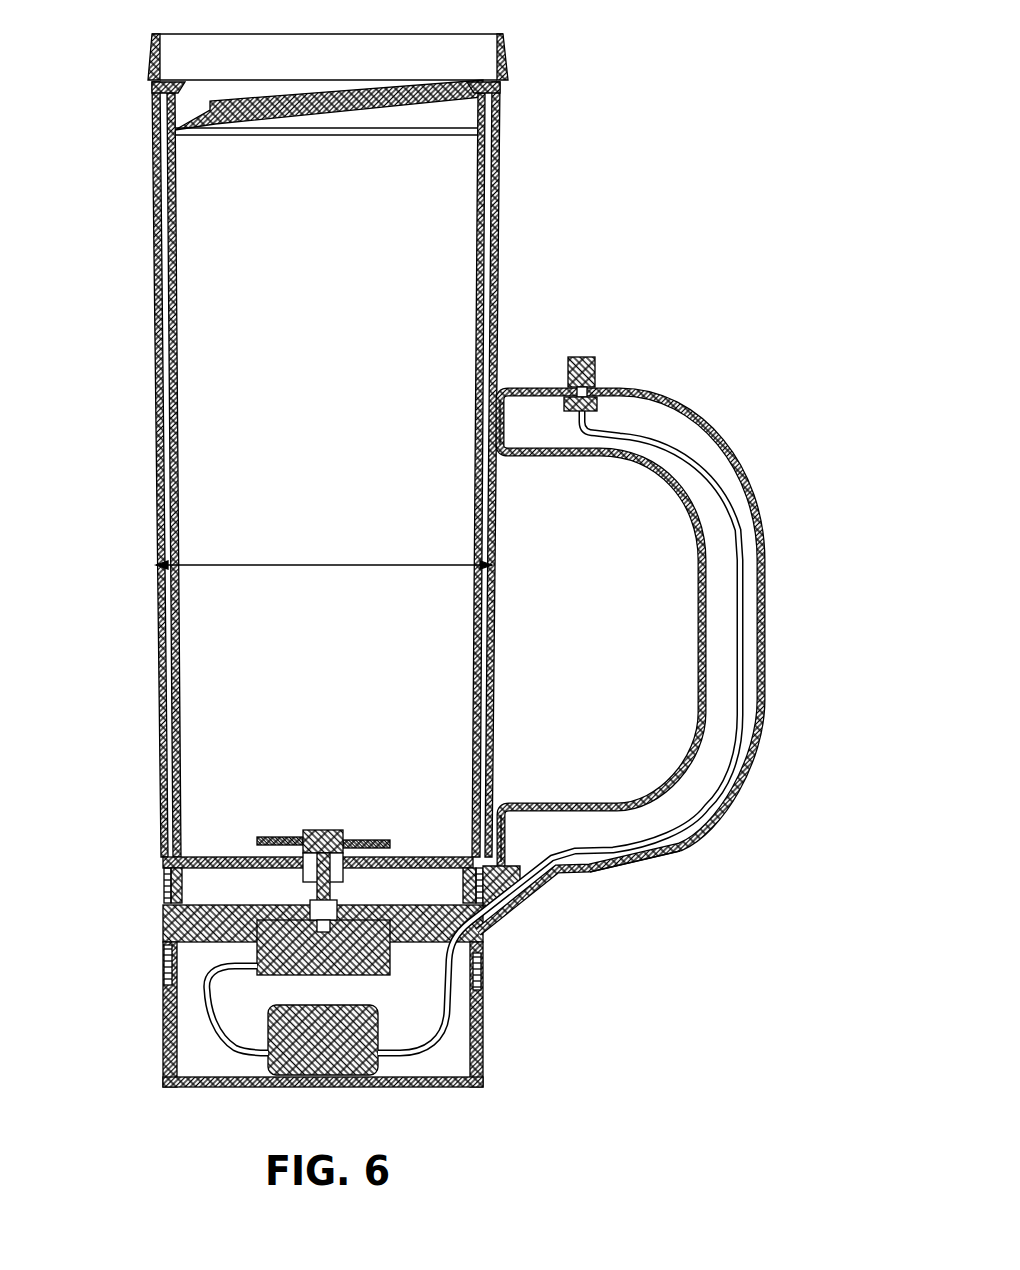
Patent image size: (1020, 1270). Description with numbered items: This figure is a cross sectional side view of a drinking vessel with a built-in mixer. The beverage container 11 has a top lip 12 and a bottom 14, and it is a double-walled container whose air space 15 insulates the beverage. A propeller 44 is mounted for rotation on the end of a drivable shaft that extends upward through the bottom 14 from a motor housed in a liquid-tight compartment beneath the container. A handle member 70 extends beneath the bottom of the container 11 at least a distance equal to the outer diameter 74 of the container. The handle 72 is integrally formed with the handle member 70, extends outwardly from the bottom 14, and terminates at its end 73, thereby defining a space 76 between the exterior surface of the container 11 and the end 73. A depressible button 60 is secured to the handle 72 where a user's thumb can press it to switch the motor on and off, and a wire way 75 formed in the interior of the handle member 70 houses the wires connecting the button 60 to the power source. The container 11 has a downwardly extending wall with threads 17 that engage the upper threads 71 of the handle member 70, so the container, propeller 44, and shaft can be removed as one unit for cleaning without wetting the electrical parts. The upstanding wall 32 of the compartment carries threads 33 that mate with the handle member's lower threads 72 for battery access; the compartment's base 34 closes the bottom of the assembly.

The beverage container 11 is at (500, 192).
The top lip 12 is at (500, 92).
The bottom 14 is at (420, 855).
The air space 15 is at (152, 393).
The threads 17 is at (163, 882).
The upstanding wall 32 is at (163, 1033).
The threads 33 is at (163, 972).
The base bottom plate 34 is at (447, 1075).
The propeller 44 is at (277, 836).
The depressible button 60 is at (600, 362).
The handle member 70 is at (540, 882).
The upper threads 71 is at (505, 915).
The handle 72 is at (765, 600).
The end 73 is at (500, 385).
The outer diameter 74 is at (323, 565).
The wire way 75 is at (513, 860).
The space 76 is at (500, 458).